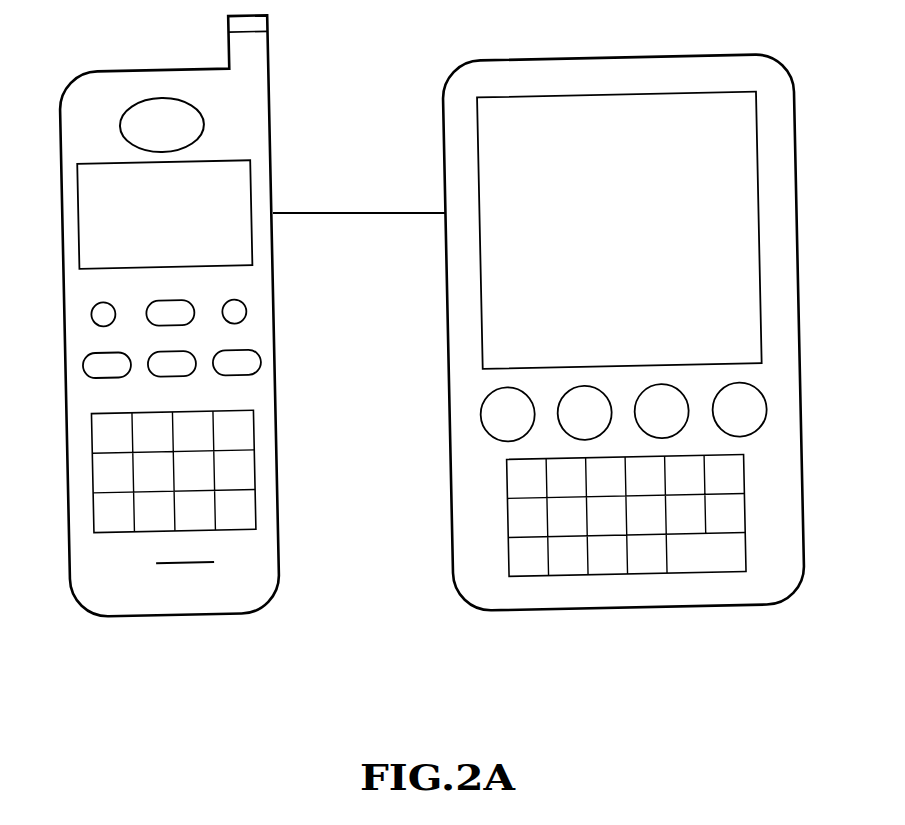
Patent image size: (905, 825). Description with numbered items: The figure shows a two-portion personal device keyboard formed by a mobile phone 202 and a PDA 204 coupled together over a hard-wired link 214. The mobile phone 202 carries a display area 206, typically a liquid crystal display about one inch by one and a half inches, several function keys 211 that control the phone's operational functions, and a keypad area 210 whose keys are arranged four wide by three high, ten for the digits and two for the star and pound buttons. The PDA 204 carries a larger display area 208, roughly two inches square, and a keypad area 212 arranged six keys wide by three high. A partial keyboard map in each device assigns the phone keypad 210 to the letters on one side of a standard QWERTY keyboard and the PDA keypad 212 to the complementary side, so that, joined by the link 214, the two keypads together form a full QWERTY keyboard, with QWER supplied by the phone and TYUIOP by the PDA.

The mobile phone 202 is at (141, 70).
The PDA 204 is at (674, 57).
The display area 206 is at (122, 168).
The display area 208 is at (750, 205).
The keypad area 210 is at (76, 402).
The function keys 211 is at (86, 290).
The keypad area 212 is at (789, 480).
The link 214 is at (361, 214).